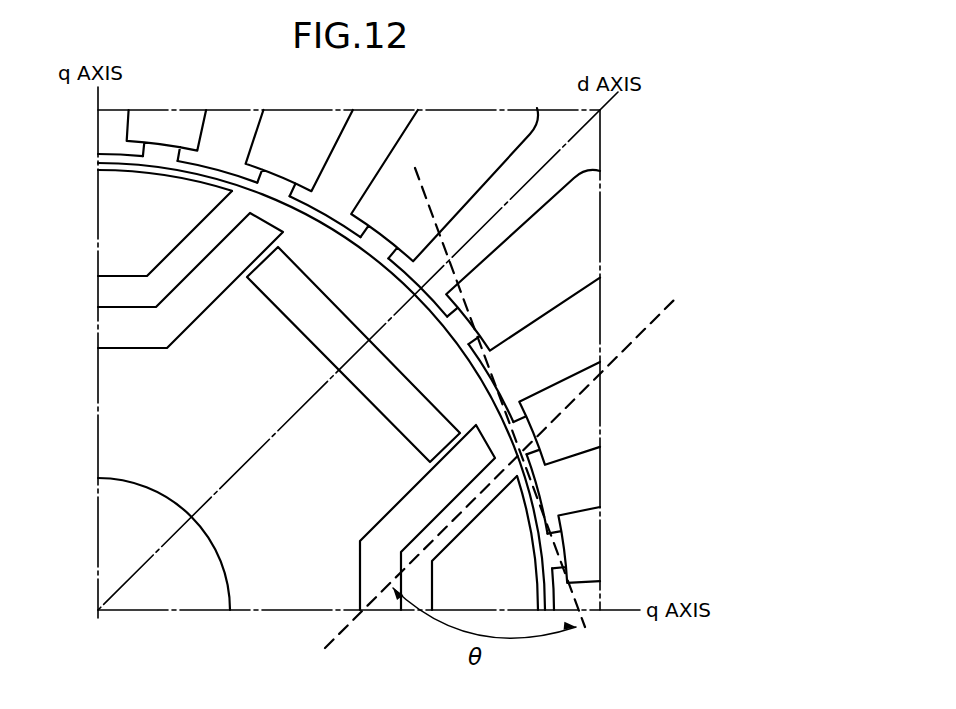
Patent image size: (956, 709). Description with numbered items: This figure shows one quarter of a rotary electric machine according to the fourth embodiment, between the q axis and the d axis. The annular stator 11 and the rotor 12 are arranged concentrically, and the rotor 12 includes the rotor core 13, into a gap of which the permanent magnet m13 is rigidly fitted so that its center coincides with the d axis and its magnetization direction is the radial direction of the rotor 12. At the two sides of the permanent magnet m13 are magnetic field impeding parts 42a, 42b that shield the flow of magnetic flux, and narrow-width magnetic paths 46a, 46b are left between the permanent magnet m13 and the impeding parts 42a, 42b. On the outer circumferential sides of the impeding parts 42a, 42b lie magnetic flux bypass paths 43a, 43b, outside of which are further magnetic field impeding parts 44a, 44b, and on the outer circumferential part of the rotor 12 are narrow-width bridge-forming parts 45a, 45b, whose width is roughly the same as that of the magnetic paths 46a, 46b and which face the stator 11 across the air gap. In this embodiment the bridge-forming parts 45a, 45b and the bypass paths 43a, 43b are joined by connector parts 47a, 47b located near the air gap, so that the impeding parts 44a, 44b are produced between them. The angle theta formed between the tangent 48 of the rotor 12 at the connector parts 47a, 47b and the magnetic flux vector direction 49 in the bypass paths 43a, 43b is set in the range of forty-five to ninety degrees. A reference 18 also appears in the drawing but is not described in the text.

The stator 11 is at (578, 222).
The rotor 12 is at (134, 373).
The rotor core 13 is at (143, 450).
The bridge portion 18 is at (420, 590).
The magnetic field impeding part 42a is at (110, 324).
The magnetic field impeding part 42b is at (378, 587).
The magnetic flux bypass path 43a is at (110, 291).
The magnetic flux bypass path 43b is at (418, 537).
The magnetic field impeding part 44a is at (145, 232).
The magnetic field impeding part 44b is at (472, 568).
The bridge-forming part 45a is at (110, 166).
The bridge-forming part 45b is at (545, 556).
The magnetic path 46a is at (262, 256).
The magnetic path 46b is at (452, 452).
The connector part 47a is at (237, 203).
The connector part 47b is at (512, 470).
The tangent 48 is at (588, 632).
The magnetic flux vector direction 49 is at (643, 328).
The permanent magnet m13 is at (313, 336).